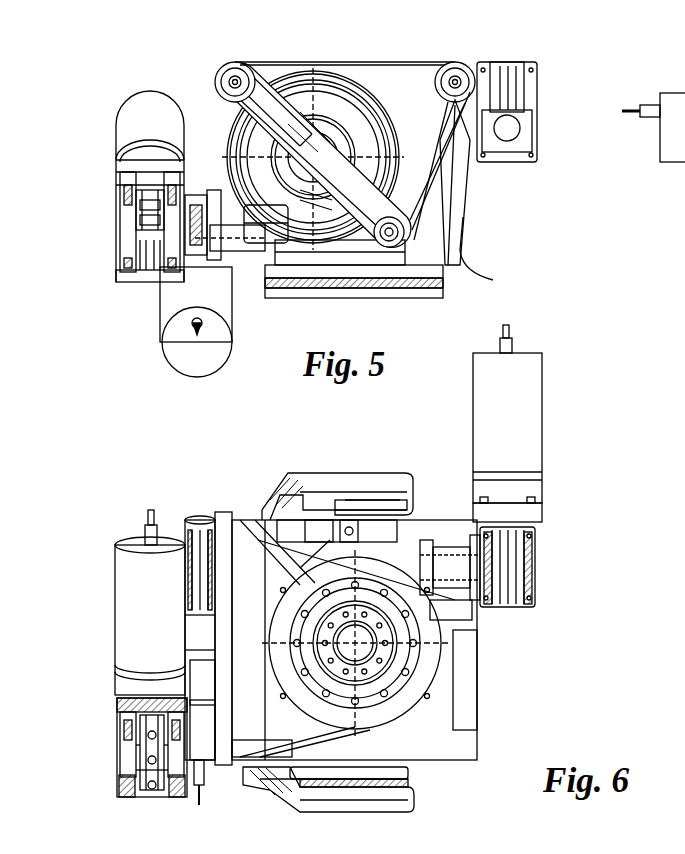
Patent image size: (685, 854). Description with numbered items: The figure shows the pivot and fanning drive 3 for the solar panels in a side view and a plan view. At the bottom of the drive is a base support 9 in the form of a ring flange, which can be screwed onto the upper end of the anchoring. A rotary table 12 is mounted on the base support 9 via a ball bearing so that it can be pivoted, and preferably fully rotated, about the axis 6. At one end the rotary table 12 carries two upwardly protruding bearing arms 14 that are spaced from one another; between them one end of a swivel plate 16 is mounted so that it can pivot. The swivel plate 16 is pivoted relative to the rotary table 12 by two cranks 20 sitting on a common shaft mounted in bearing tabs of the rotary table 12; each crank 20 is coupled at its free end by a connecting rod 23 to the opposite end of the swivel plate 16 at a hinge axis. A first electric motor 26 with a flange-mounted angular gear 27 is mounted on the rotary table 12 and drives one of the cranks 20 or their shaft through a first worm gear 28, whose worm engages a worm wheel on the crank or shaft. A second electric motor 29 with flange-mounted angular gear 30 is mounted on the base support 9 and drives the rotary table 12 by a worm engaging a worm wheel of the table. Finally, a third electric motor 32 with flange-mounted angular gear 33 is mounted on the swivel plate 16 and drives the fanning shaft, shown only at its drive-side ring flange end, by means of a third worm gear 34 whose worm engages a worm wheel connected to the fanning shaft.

In FIG. 5, the pivot and fanning drive 3 is at (553, 247).
In FIG. 6, the pivot and fanning drive 3 is at (588, 632).
In FIG. 5, the axis 6 is at (350, 290).
In FIG. 6, the axis 6 is at (346, 638).
In FIG. 5, the base support 9 is at (420, 295).
In FIG. 5, the rotary table 12 is at (372, 266).
In FIG. 5, the bearing arms 14 is at (455, 130).
In FIG. 5, the swivel plate 16 is at (270, 76).
In FIG. 6, the swivel plate 16 is at (290, 570).
In FIG. 5, the cranks 20 is at (328, 254).
In FIG. 6, the cranks 20 is at (368, 500).
In FIG. 5, the connecting rod 23 is at (245, 110).
In FIG. 6, the connecting rod 23 is at (355, 476).
In FIG. 5, the first electric motor 26 is at (135, 128).
In FIG. 6, the first electric motor 26 is at (150, 628).
In FIG. 6, the angular gear 27 is at (120, 752).
In FIG. 5, the first worm gear 28 is at (283, 265).
In FIG. 5, the second electric motor 29 is at (180, 343).
In FIG. 6, the second electric motor 29 is at (205, 685).
In FIG. 6, the angular gear 30 is at (190, 520).
In FIG. 5, the third electric motor 32 is at (541, 135).
In FIG. 6, the third electric motor 32 is at (527, 440).
In FIG. 6, the angular gear 33 is at (527, 577).
In FIG. 6, the third worm gear 34 is at (385, 556).